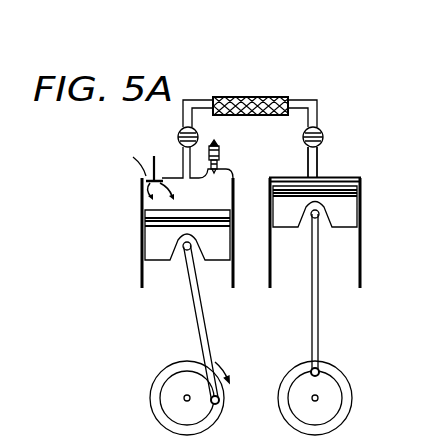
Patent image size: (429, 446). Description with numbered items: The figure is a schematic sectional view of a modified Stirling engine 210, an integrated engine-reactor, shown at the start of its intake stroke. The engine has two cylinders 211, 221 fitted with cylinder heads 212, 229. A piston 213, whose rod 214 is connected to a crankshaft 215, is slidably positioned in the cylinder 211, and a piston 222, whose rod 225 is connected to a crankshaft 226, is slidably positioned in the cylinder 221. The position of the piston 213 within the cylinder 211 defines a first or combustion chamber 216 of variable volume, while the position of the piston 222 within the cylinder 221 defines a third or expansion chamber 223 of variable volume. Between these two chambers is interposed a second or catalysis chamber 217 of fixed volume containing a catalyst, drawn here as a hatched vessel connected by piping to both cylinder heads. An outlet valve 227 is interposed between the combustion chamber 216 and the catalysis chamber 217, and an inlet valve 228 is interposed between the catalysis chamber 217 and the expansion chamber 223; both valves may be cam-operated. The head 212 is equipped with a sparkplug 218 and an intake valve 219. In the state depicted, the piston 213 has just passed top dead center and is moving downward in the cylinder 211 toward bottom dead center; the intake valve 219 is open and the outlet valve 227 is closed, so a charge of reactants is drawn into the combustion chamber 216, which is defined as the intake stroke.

The modified Stirling engine 210 is at (331, 85).
The cylinder 211 is at (141, 268).
The cylinder head 212 is at (148, 179).
The piston 213 is at (143, 244).
The rod 214 is at (193, 324).
The crankshaft 215 is at (163, 381).
The combustion chamber 216 is at (142, 197).
The catalysis chamber 217 is at (247, 116).
The sparkplug 218 is at (222, 156).
The intake valve 219 is at (149, 177).
The cylinder 221 is at (362, 270).
The piston 222 is at (358, 208).
The expansion chamber 223 is at (361, 179).
The rod 225 is at (320, 314).
The crankshaft 226 is at (349, 386).
The outlet valve 227 is at (178, 134).
The inlet valve 228 is at (323, 136).
The cylinder head 229 is at (350, 178).